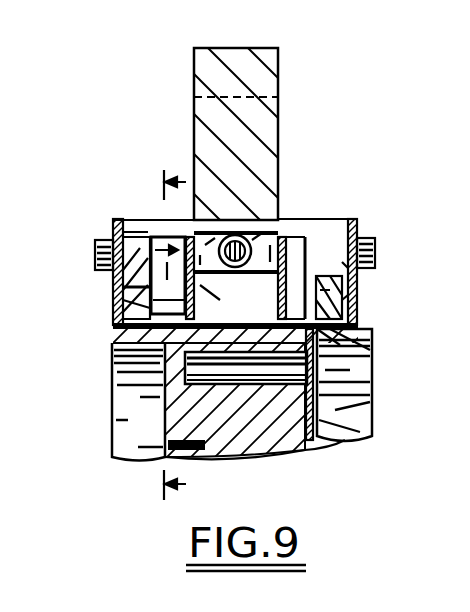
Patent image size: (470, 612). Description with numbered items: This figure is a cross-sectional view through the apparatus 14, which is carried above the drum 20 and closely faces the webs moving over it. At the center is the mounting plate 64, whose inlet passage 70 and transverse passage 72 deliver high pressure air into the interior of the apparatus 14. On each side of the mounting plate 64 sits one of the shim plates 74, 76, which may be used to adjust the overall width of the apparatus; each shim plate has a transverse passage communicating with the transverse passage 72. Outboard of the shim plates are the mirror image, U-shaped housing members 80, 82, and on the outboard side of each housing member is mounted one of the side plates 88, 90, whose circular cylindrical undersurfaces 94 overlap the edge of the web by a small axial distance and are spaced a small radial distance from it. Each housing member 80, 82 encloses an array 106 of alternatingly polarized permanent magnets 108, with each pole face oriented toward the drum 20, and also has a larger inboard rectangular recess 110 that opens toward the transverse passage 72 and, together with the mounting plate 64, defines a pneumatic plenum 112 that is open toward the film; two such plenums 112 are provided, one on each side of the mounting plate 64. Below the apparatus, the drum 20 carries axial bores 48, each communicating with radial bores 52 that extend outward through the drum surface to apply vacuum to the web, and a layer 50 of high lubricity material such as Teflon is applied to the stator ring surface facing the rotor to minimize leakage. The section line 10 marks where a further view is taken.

The section line 10 is at (157, 335).
The apparatus 14 is at (158, 138).
The drum 20 is at (112, 426).
The axial bores 48 is at (228, 446).
The layer of high lubricity material 50 is at (365, 446).
The radial bores 52 is at (246, 386).
The central mounting plate 64 is at (281, 110).
The inlet passage 70 is at (278, 218).
The transverse passage 72 is at (279, 204).
The shim plate 74 is at (218, 208).
The shim plate 76 is at (375, 253).
The housing member 80 is at (143, 218).
The housing member 82 is at (344, 219).
The side plate 88 is at (112, 226).
The side plate 90 is at (357, 290).
The circular cylindrical undersurface 94 is at (115, 340).
The array of permanent magnets 106 is at (264, 294).
The permanent magnet 108 is at (118, 290).
The inboard rectangular recess 110 is at (95, 256).
The pneumatic plenum 112 is at (189, 336).